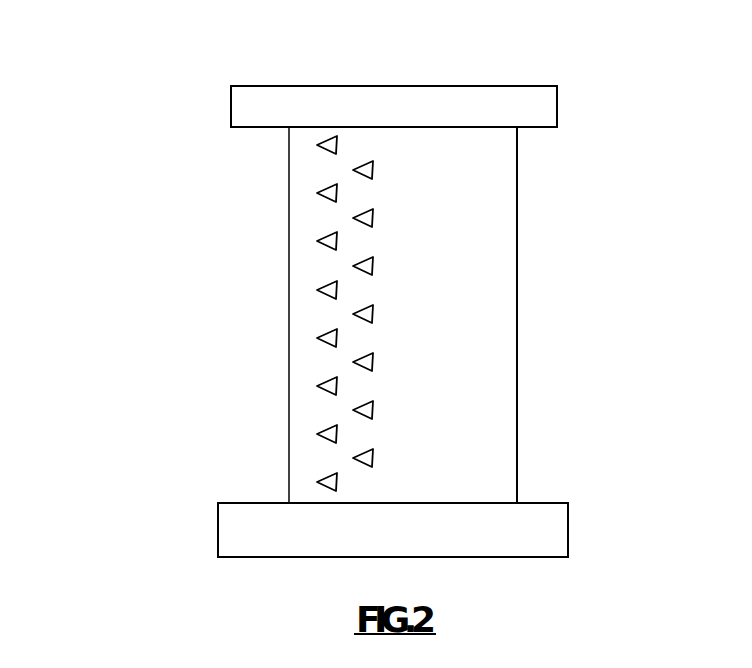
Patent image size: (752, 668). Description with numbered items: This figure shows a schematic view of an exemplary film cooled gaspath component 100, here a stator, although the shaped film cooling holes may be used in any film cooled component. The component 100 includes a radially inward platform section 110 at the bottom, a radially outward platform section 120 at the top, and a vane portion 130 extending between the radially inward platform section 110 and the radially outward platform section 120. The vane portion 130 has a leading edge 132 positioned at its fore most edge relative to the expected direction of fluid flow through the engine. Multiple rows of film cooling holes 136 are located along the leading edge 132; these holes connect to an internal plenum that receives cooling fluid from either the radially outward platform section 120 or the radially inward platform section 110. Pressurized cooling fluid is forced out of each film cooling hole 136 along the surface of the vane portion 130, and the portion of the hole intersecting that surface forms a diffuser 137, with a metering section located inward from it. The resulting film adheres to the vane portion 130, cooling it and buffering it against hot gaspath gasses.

The film cooled gaspath component 100 is at (118, 66).
The radially inward platform section 110 is at (550, 531).
The radially outward platform section 120 is at (540, 107).
The vane portion 130 is at (499, 320).
The leading edge 132 is at (289, 322).
The film cooling holes 136 is at (357, 165).
The diffuser 137 is at (371, 168).